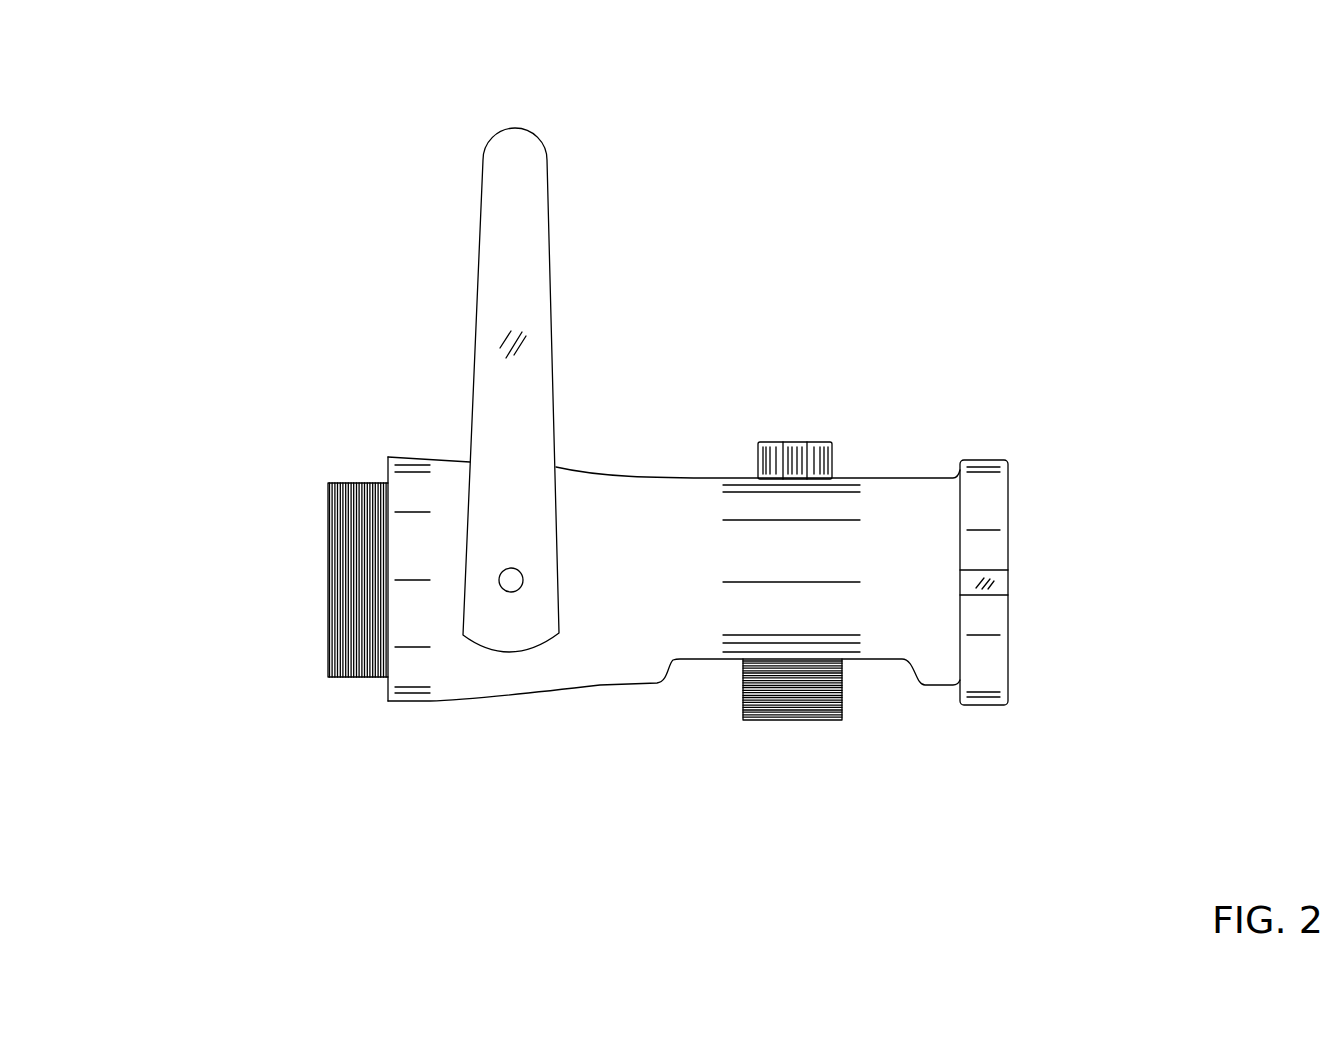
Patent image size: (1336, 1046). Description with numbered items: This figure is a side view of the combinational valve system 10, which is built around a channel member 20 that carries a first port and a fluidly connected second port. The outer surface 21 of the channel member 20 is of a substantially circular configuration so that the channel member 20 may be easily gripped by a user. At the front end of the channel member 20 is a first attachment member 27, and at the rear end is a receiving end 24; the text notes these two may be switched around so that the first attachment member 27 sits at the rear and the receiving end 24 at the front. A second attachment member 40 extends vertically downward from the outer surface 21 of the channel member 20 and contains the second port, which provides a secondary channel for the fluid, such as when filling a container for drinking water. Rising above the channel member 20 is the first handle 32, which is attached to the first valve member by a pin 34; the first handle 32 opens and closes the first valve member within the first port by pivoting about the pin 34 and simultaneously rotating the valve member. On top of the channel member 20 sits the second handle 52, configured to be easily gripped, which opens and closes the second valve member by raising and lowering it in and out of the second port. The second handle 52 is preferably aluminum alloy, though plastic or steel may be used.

The combinational valve system 10 is at (212, 148).
The channel member 20 is at (503, 717).
The outer surface 21 is at (625, 508).
The receiving end 24 is at (1008, 668).
The first attachment member 27 is at (340, 543).
The first handle 32 is at (530, 217).
The pin 34 is at (507, 590).
The second attachment member 40 is at (802, 708).
The second handle 52 is at (820, 442).